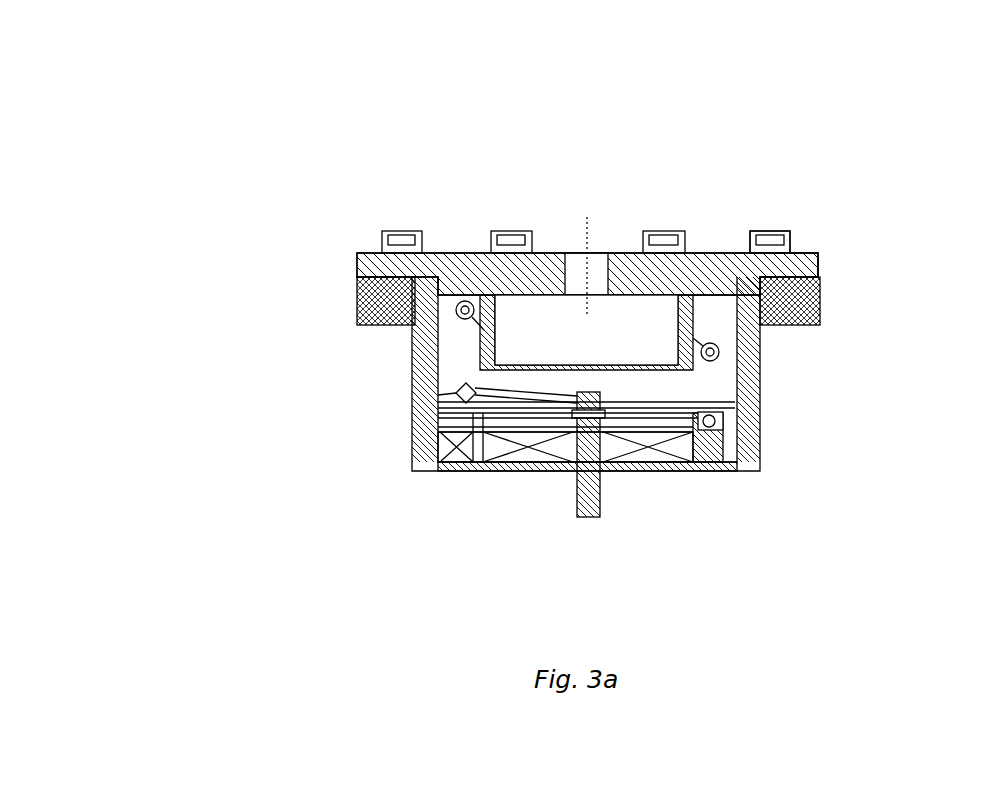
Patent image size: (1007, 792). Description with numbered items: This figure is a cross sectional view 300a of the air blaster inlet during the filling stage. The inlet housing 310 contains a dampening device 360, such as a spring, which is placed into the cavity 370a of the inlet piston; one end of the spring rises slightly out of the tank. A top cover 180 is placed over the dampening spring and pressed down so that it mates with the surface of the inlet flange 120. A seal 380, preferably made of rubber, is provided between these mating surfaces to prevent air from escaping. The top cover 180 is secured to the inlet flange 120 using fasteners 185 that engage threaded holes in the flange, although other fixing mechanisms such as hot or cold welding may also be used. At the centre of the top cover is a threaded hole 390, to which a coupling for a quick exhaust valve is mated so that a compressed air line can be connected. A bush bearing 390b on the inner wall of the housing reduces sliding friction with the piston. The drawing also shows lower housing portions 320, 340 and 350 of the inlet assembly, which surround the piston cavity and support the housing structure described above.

The cross sectional view 300a is at (163, 96).
The inlet flange 120 is at (826, 284).
The top cover 180 is at (826, 245).
The fasteners 185 is at (774, 219).
The inlet housing 310 is at (766, 399).
The housing base 320 is at (690, 466).
The top plate 340 is at (392, 293).
The side block 350 is at (392, 304).
The dampening device 360 is at (434, 401).
The cavity 370a is at (434, 428).
The seal 380 is at (430, 270).
The threaded hole 390 is at (603, 247).
The bush bearing 390b is at (452, 289).